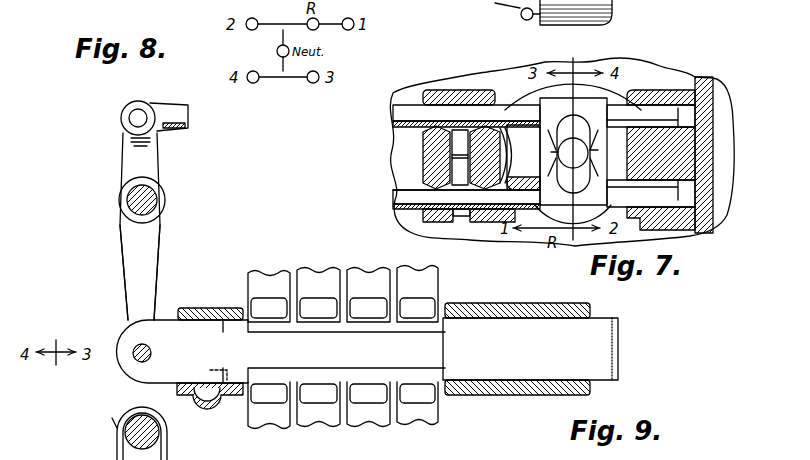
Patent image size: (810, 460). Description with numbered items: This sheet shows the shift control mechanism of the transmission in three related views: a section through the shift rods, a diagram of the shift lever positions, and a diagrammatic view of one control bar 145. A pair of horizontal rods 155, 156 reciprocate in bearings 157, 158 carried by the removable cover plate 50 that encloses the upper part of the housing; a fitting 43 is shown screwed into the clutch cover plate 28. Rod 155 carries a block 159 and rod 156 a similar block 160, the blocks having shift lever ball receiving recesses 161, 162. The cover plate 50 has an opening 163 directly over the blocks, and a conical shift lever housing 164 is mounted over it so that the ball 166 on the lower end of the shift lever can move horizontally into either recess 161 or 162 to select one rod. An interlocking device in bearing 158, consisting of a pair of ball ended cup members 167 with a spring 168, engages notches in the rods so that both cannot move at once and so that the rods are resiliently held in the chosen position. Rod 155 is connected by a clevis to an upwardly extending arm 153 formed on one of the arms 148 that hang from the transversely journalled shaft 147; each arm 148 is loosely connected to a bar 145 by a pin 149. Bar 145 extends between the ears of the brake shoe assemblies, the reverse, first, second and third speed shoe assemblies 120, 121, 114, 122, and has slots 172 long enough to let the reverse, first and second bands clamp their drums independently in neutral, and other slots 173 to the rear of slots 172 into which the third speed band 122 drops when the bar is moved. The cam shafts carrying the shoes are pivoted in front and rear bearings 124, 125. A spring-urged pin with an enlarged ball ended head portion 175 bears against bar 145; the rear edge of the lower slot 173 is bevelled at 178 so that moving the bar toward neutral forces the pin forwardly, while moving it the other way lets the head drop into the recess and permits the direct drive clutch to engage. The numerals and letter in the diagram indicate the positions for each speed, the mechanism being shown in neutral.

In FIG. 7, the clutch cover plate 28 is at (705, 135).
In FIG. 7, the fitting 43 is at (521, 15).
In FIG. 7, the removable cover plate 50 is at (469, 226).
In FIG. 9, the shoe assembly 114 is at (318, 273).
In FIG. 9, the shoe assembly 120 is at (415, 272).
In FIG. 9, the shoe assembly 121 is at (365, 273).
In FIG. 9, the shoe assembly 122 is at (268, 276).
In FIG. 9, the front bearing 124 is at (532, 303).
In FIG. 9, the rear bearing 125 is at (210, 308).
In FIG. 9, the bar 145 is at (530, 349).
In FIG. 8, the shaft 147 is at (128, 200).
In FIG. 9, the shaft 147 is at (120, 446).
In FIG. 8, the arm 148 is at (140, 270).
In FIG. 9, the pin 149 is at (133, 360).
In FIG. 8, the upwardly extending arm 153 is at (133, 153).
In FIG. 8, the rod 155 is at (196, 103).
In FIG. 7, the rod 155 is at (410, 196).
In FIG. 7, the rod 156 is at (402, 112).
In FIG. 7, the bearing 157 is at (661, 92).
In FIG. 7, the bearing 158 is at (448, 90).
In FIG. 7, the block 159 is at (548, 186).
In FIG. 7, the block 160 is at (573, 151).
In FIG. 7, the ball receiving recess 161 is at (574, 185).
In FIG. 7, the ball receiving recess 162 is at (573, 154).
In FIG. 7, the opening 163 is at (503, 130).
In FIG. 7, the conical shift lever housing 164 is at (522, 86).
In FIG. 7, the ball 166 is at (592, 146).
In FIG. 7, the ball ended cup member 167 is at (420, 140).
In FIG. 7, the spring 168 is at (452, 157).
In FIG. 9, the slot 172 is at (372, 340).
In FIG. 9, the slot 173 is at (250, 325).
In FIG. 9, the ball ended head portion 175 is at (205, 396).
In FIG. 9, the bevelled edge 178 is at (207, 375).